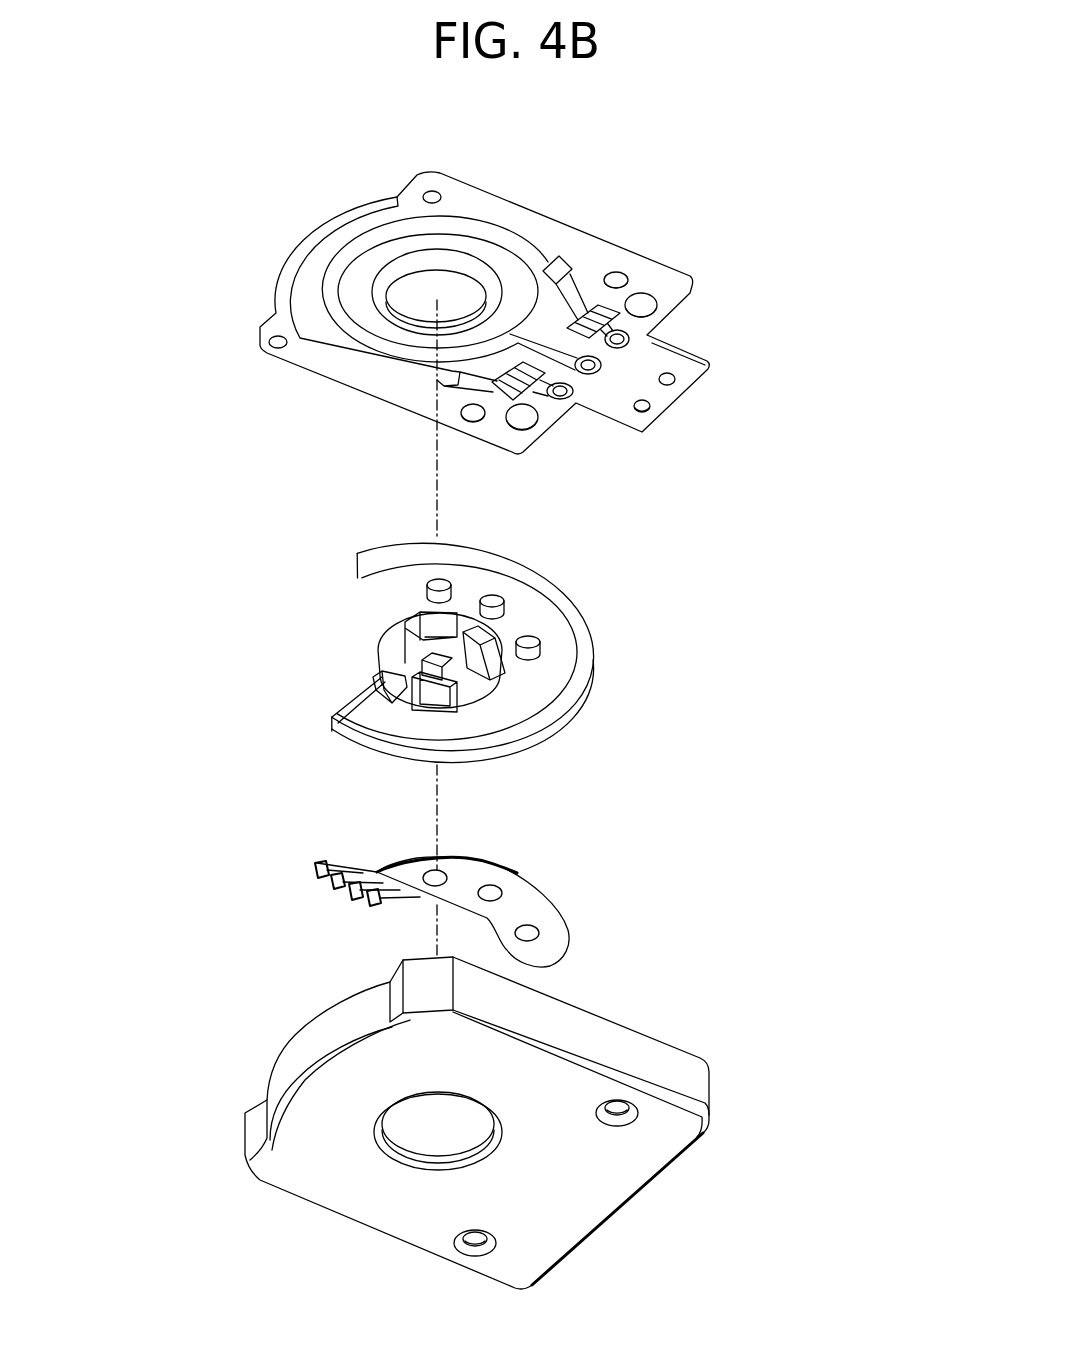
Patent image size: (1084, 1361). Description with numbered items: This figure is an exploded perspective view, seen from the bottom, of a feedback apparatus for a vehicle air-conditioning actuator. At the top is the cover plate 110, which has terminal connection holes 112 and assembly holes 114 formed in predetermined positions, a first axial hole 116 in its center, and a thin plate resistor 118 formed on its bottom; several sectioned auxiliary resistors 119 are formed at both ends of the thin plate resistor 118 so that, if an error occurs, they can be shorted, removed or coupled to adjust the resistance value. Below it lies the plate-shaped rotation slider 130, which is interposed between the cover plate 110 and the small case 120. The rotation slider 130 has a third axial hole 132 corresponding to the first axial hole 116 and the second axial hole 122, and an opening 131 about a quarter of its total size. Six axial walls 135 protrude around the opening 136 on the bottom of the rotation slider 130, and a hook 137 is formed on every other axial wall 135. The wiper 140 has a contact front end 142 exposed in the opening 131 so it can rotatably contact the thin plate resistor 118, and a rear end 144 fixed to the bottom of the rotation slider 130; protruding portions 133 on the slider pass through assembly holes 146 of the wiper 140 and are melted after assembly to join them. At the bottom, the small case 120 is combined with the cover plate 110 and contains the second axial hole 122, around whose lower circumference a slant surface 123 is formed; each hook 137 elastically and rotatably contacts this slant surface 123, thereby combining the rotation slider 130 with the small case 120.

The cover plate 110 is at (511, 298).
The terminal connection holes 112 is at (673, 383).
The through hole 114 is at (657, 303).
The first axial hole 116 is at (423, 303).
The thin plate resistor 118 is at (517, 240).
The auxiliary resistors 119 is at (600, 307).
The small case 120 is at (537, 1137).
The second axial hole 122 is at (423, 1132).
The slant surface 123 is at (482, 1163).
The rotation slider 130 is at (469, 634).
The opening 131 is at (388, 607).
The third axial hole 132 is at (460, 704).
The protruding portions 133 is at (533, 647).
The axial walls 135 is at (483, 697).
The opening 136 is at (463, 710).
The hook 137 is at (502, 678).
The wiper 140 is at (372, 887).
The contact front end 142 is at (318, 868).
The rear end 144 is at (497, 918).
The assembly holes 146 is at (435, 873).